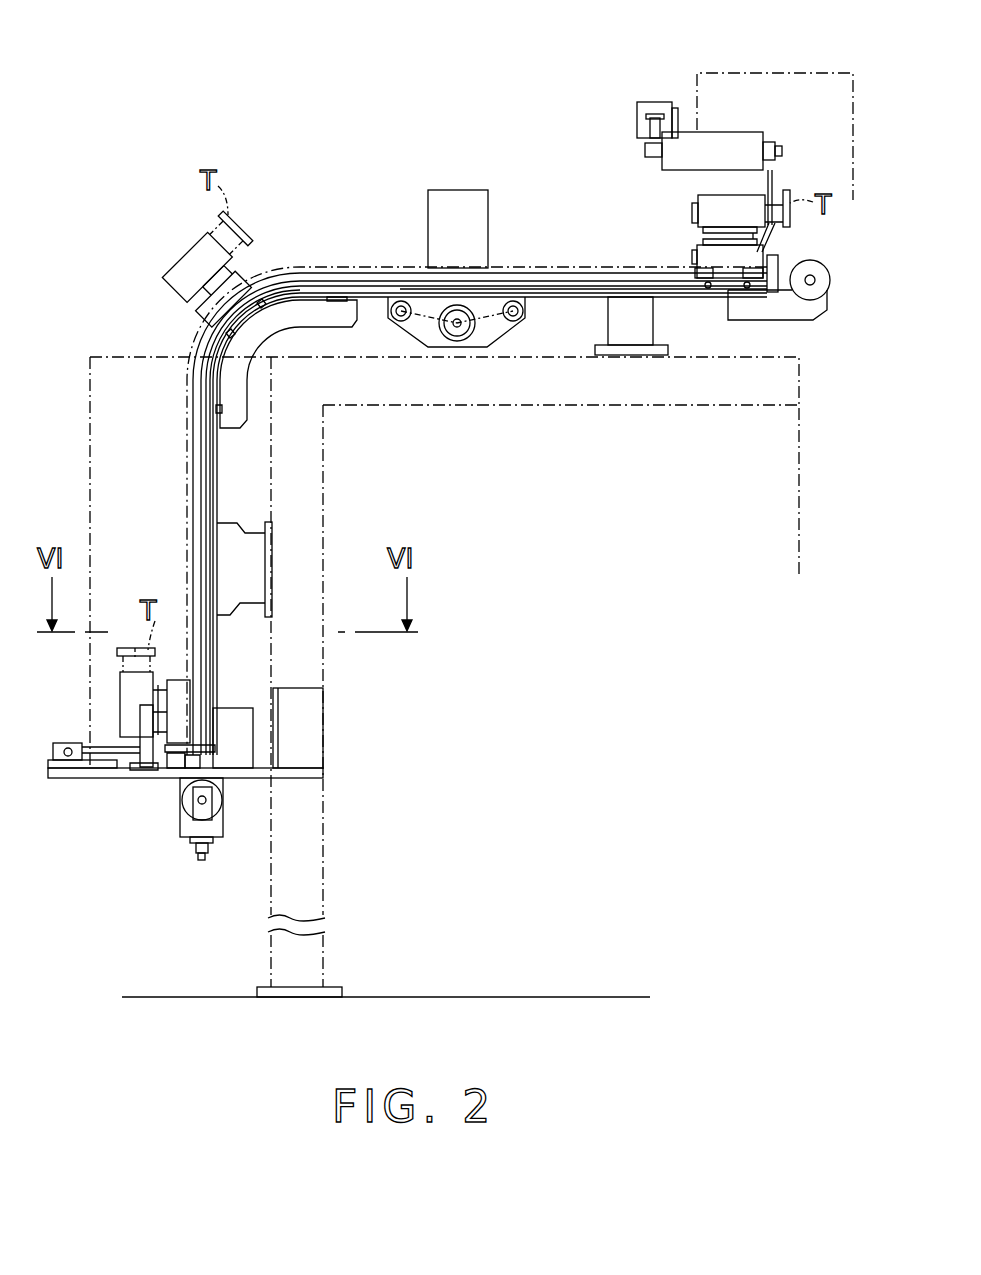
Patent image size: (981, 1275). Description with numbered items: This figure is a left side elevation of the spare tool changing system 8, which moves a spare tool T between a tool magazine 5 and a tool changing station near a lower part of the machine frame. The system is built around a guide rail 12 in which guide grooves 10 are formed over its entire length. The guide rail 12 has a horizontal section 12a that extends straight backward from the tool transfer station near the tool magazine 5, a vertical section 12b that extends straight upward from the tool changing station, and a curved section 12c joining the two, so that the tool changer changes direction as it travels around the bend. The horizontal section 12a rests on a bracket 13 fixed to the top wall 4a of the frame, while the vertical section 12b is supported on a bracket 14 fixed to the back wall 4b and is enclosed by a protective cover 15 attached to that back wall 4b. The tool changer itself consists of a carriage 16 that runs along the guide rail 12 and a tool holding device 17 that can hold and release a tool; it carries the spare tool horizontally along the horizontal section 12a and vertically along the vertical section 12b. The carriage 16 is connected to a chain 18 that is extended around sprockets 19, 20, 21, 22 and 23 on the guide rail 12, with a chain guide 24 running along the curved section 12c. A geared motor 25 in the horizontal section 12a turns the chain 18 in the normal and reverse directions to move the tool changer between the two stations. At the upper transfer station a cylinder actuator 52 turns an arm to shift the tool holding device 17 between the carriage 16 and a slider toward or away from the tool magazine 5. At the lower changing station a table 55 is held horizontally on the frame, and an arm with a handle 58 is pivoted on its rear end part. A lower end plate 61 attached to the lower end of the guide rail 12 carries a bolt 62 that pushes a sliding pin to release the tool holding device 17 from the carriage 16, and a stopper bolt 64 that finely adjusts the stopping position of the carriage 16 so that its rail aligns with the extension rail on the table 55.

The top wall 4a is at (770, 357).
The back wall 4b is at (323, 848).
The tool magazine 5 is at (757, 73).
The spare tool changing system 8 is at (312, 208).
The guide grooves 10 is at (374, 287).
The guide rail 12 is at (318, 273).
The horizontal section 12a is at (566, 288).
The vertical section 12b is at (197, 467).
The curved section 12c is at (282, 291).
The bracket 13 is at (653, 324).
The bracket 14 is at (250, 543).
The protective cover 15 is at (145, 357).
The carriage 16 is at (700, 252).
The tool holding device 17 is at (718, 210).
The chain 18 is at (510, 268).
The sprocket 19 is at (830, 280).
The sprocket 20 is at (514, 322).
The sprocket 21 is at (457, 341).
The sprocket 22 is at (402, 322).
The sprocket 23 is at (222, 820).
The chain guide 24 is at (308, 330).
The geared motor 25 is at (455, 190).
The cylinder actuator 52 is at (655, 102).
The table 55 is at (68, 780).
The handle 58 is at (68, 743).
The lower end plate 61 is at (212, 760).
The bolt 62 is at (167, 768).
The stopper bolt 64 is at (192, 770).